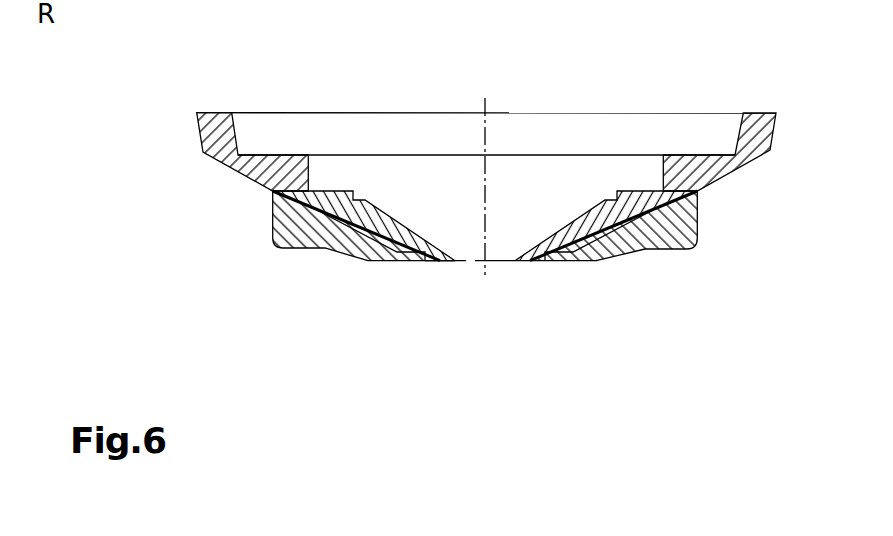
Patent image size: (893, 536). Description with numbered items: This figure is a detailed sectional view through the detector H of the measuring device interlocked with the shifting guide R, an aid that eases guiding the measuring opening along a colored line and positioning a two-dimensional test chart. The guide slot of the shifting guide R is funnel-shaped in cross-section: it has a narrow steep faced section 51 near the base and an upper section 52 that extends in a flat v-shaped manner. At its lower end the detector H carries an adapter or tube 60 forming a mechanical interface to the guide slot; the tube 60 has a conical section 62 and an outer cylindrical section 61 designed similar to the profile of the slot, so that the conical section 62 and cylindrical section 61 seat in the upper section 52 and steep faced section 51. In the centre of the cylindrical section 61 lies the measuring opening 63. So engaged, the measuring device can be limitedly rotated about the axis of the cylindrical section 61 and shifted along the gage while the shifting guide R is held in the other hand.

The detector H is at (403, 137).
The tube 60 is at (220, 135).
The shifting guide R is at (258, 227).
The conical section 62 is at (587, 223).
The upper section 52 is at (342, 228).
The steep faced section 51 is at (410, 257).
The cylindrical section 61 is at (435, 261).
The measuring opening 63 is at (473, 252).